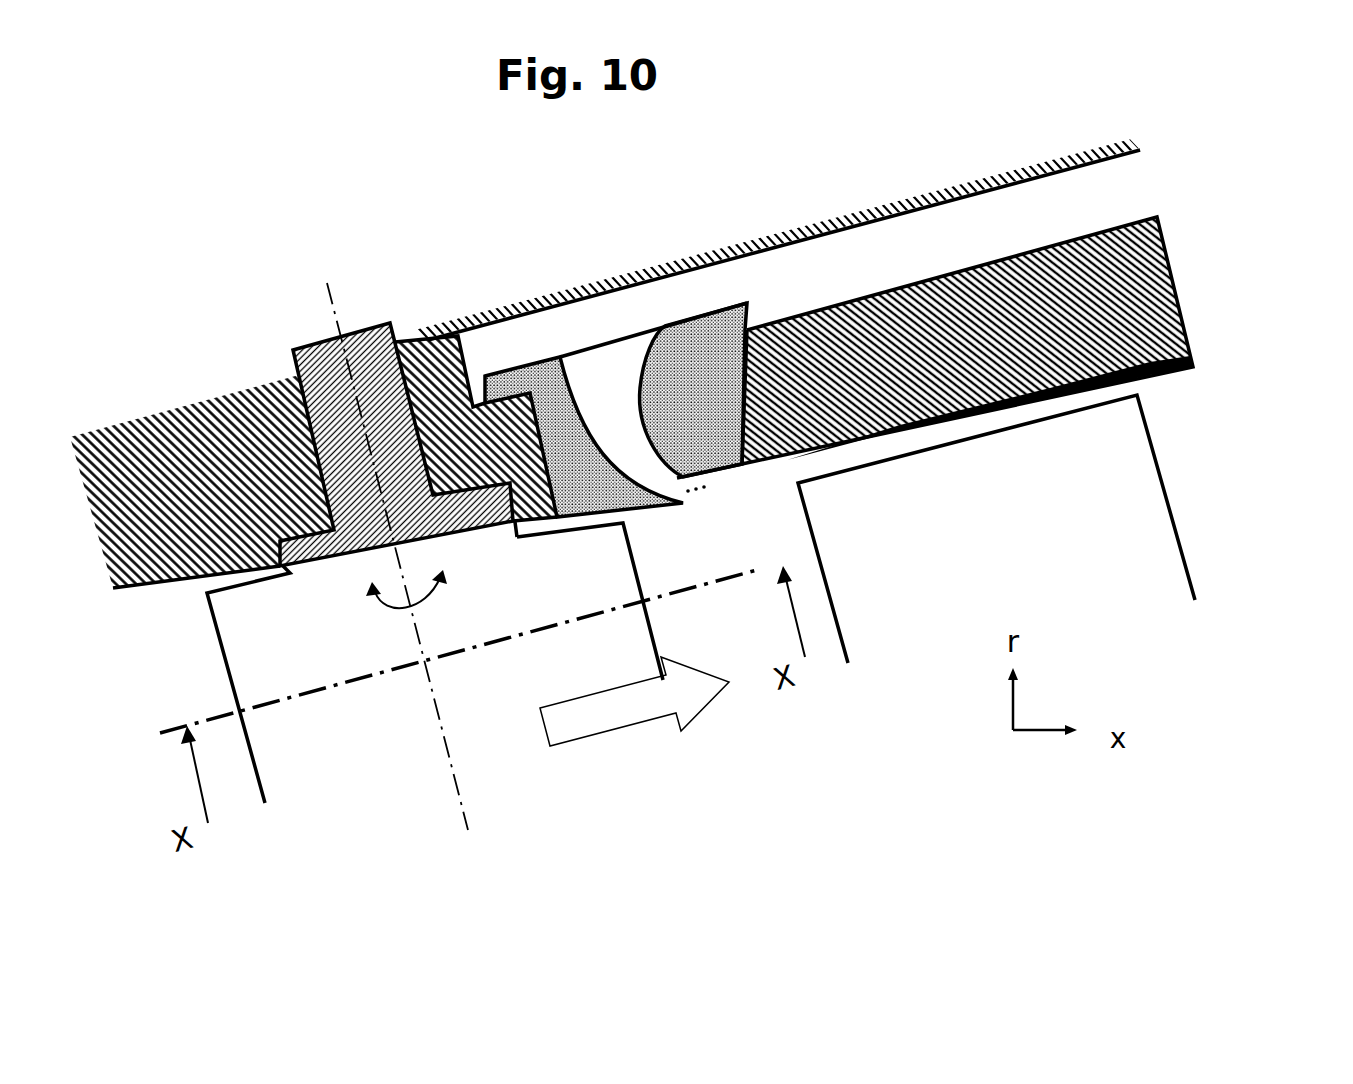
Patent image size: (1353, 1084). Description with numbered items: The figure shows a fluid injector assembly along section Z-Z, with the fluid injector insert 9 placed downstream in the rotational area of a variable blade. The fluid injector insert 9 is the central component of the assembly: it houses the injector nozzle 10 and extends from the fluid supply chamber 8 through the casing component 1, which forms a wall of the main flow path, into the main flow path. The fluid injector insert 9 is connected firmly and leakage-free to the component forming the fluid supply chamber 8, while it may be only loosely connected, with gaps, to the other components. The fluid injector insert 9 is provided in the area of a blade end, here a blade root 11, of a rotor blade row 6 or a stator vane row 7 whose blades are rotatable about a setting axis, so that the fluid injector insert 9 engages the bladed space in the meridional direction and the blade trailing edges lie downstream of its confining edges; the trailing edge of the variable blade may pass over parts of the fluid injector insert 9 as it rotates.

The casing component 1 is at (1107, 300).
The rotor blade row 6 is at (1130, 458).
The stator vane row 7 is at (372, 742).
The fluid supply chamber 8 is at (1095, 193).
The fluid injector insert 9 is at (690, 345).
The injector nozzle 10 is at (700, 495).
The blade root 11 is at (383, 320).